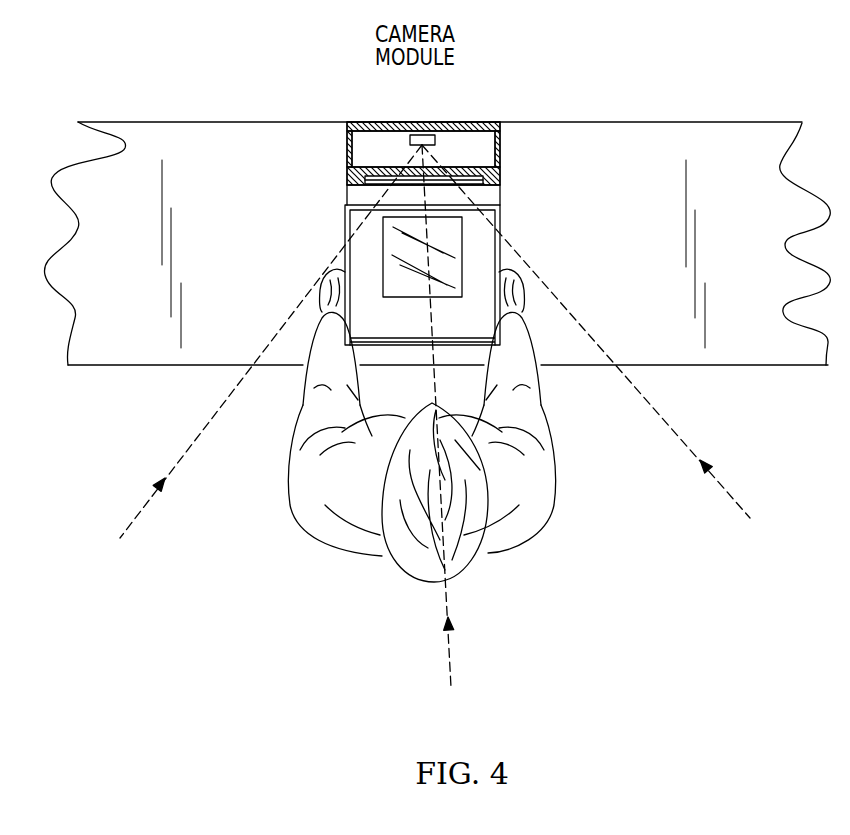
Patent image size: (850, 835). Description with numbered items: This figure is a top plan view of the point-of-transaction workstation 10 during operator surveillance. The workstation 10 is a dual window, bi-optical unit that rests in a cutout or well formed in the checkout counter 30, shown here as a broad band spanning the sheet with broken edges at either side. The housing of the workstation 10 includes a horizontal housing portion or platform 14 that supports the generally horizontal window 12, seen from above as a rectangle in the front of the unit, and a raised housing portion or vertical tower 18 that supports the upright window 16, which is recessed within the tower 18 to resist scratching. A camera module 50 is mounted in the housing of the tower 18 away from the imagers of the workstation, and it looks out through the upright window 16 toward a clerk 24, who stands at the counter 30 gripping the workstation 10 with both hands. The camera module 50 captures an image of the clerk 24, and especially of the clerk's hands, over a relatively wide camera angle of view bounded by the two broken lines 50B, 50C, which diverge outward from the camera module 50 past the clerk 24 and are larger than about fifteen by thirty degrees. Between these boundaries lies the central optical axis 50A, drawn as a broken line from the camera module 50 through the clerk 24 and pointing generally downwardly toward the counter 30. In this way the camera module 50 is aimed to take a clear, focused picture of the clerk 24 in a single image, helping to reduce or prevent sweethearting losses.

The point-of-transaction workstation 10 is at (527, 112).
The horizontal window 12 is at (396, 270).
The horizontal housing portion or platform 14 is at (483, 240).
The upright window 16 is at (383, 170).
The raised housing portion or vertical tower 18 is at (500, 148).
The clerk 24 is at (360, 535).
The checkout counter 30 is at (733, 135).
The camera module 50 is at (422, 135).
The central optical axis 50A is at (452, 662).
The camera angle of view boundary 50B is at (735, 500).
The camera angle of view boundary 50C is at (135, 518).